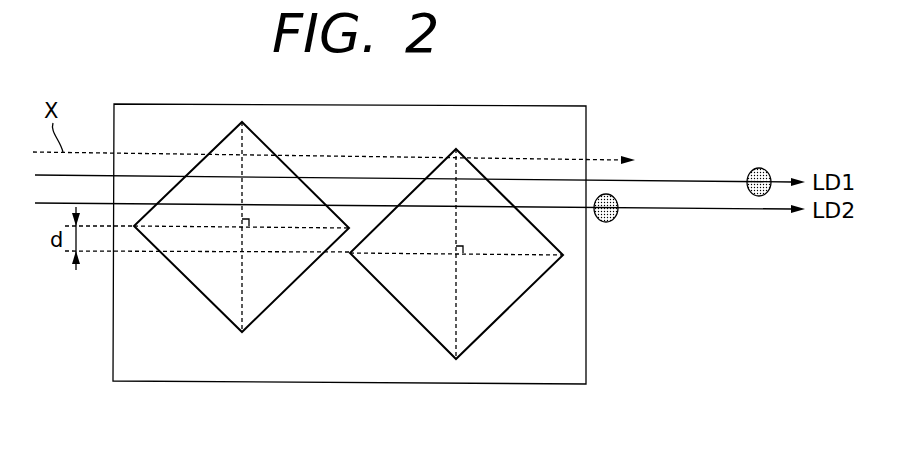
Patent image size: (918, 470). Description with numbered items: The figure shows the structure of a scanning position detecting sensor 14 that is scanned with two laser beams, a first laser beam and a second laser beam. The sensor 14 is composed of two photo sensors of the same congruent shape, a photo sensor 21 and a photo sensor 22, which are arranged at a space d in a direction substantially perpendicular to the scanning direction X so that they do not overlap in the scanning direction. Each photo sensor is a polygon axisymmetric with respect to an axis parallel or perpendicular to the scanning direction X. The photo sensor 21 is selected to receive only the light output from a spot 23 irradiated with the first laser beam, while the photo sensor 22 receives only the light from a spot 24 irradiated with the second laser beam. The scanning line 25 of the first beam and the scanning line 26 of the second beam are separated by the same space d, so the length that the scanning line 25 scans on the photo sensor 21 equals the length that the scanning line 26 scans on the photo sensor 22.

The scanning position detecting sensor 14 is at (225, 383).
The photo sensor 21 is at (190, 283).
The photo sensor 22 is at (395, 303).
The spot 23 is at (758, 168).
The spot 24 is at (606, 222).
The scanning line 25 is at (688, 178).
The scanning line 26 is at (680, 211).